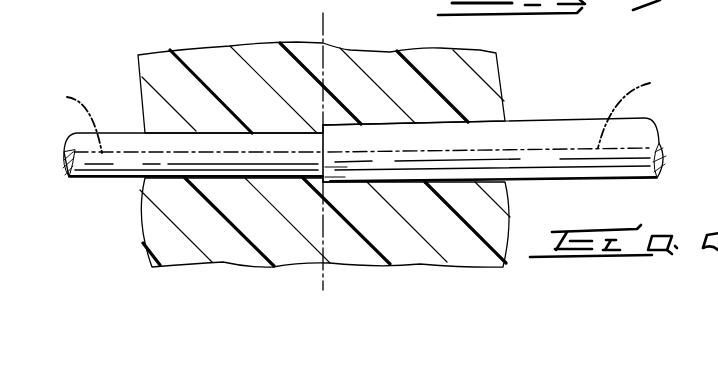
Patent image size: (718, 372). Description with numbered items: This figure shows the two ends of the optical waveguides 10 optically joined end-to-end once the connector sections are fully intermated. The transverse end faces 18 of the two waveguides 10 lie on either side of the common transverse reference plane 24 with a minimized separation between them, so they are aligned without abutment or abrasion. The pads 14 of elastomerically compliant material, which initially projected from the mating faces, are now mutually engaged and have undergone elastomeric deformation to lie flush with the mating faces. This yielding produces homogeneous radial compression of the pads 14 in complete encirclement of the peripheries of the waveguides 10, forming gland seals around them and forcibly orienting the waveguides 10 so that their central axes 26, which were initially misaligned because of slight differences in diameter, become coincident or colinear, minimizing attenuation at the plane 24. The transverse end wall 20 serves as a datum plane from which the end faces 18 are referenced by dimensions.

The optical waveguide 10 is at (154, 122).
The pad 14 is at (158, 62).
The end face 18 is at (322, 142).
The end wall 20 is at (158, 8).
The transverse reference plane 24 is at (326, 25).
The central axis 26 is at (358, 113).